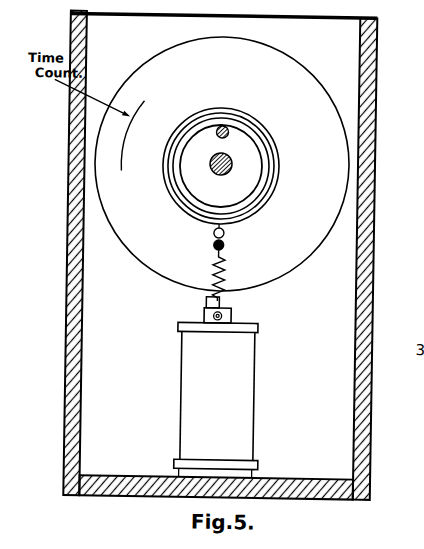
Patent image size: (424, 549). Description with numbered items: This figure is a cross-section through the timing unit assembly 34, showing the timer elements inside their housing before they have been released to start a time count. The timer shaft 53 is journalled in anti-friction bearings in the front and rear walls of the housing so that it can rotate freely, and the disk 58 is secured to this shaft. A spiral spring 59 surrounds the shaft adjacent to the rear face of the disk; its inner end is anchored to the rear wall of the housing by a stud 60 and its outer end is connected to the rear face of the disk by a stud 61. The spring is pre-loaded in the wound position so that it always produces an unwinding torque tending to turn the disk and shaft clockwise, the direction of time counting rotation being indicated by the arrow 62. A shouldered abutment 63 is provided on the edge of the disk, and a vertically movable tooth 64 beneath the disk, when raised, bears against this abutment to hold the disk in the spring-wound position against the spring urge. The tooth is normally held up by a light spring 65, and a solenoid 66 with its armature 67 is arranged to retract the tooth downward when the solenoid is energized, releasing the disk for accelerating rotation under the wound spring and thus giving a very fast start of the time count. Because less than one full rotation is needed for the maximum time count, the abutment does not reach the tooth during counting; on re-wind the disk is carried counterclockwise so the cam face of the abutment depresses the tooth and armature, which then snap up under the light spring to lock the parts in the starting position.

The timing unit assembly 34 is at (376, 202).
The timer shaft 53 is at (231, 161).
The disk 58 is at (262, 69).
The spiral spring 59 is at (256, 123).
The stud 60 is at (216, 136).
The stud 61 is at (224, 233).
The arrow 62 is at (137, 98).
The shouldered abutment 63 is at (222, 303).
The tooth 64 is at (207, 300).
The light spring 65 is at (223, 272).
The solenoid 66 is at (232, 382).
The armature 67 is at (233, 318).